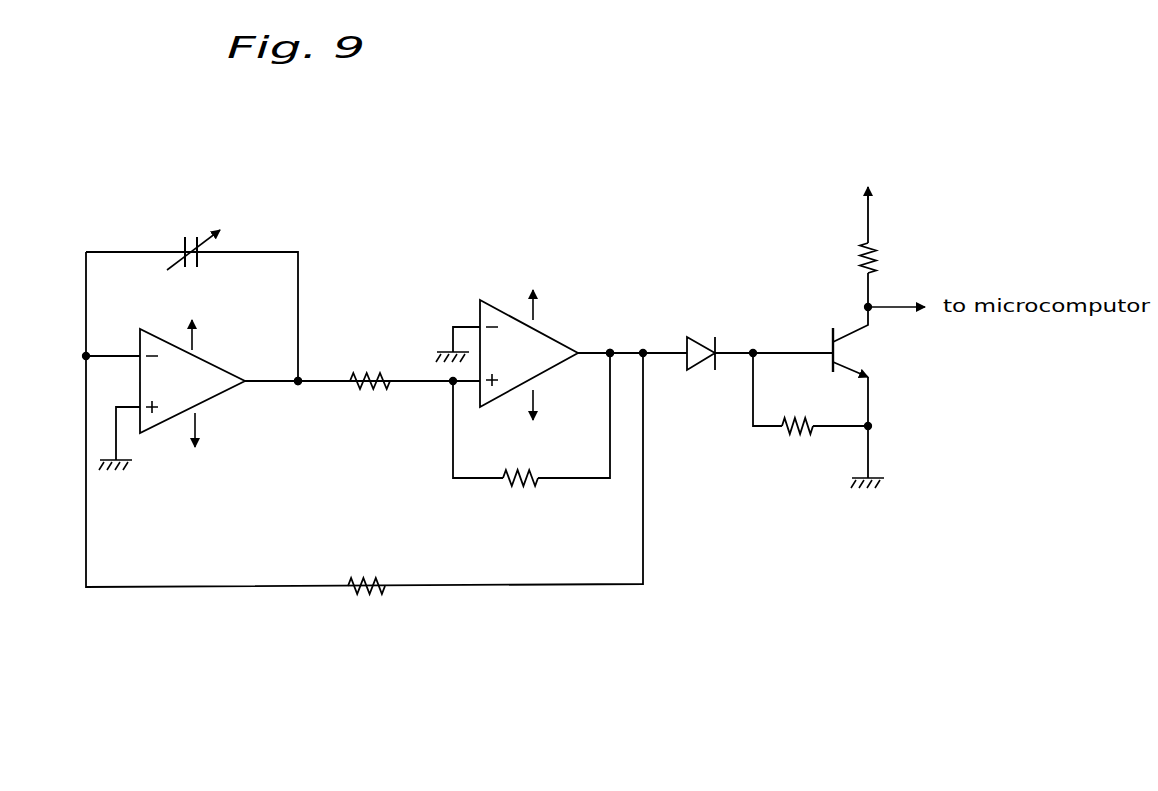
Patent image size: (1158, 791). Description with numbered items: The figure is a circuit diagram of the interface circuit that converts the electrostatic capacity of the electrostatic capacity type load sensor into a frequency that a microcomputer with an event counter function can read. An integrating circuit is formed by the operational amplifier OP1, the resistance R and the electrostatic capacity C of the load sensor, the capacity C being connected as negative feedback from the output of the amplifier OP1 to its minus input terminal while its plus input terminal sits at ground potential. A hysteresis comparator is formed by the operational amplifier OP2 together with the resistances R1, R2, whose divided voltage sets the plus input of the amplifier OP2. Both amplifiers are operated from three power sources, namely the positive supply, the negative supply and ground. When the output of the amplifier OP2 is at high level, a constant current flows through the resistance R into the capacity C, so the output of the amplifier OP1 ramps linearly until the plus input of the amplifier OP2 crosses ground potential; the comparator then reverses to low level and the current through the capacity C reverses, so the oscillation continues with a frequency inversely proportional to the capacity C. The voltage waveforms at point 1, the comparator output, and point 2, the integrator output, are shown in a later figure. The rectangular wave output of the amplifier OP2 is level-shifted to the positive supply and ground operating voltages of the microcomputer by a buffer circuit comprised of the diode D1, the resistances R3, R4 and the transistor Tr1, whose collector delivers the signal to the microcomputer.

The electrostatic capacity C is at (193, 232).
The operational amplifier OP1 is at (172, 387).
The resistance R1 is at (370, 397).
The operational amplifier OP2 is at (507, 357).
The resistance R2 is at (531, 438).
The resistance R is at (366, 568).
The diode D1 is at (700, 336).
The transistor Tr1 is at (877, 397).
The resistance R3 is at (810, 411).
The resistance R4 is at (857, 232).
The point 1 is at (612, 345).
The point 2 is at (313, 368).